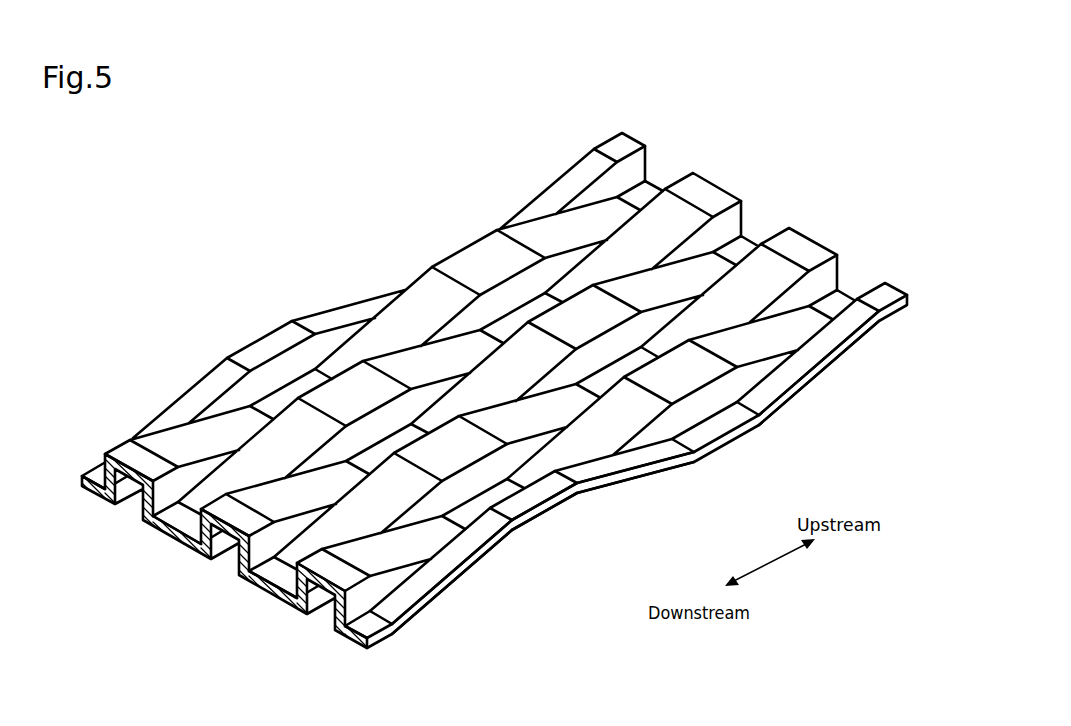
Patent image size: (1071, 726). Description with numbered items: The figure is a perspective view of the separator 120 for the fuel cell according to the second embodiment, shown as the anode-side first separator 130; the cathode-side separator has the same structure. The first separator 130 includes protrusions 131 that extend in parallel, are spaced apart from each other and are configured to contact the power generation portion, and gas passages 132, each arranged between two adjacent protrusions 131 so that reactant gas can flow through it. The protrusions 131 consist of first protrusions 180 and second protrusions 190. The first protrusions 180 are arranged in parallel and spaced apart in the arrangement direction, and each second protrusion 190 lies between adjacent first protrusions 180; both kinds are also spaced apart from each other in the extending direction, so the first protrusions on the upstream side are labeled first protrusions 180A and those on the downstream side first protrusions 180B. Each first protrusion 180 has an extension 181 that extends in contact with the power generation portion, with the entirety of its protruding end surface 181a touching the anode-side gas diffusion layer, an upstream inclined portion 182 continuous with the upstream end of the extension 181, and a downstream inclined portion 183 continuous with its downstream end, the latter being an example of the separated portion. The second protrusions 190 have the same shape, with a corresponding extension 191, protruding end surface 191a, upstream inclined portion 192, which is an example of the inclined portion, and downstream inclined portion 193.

The first separator 130 is at (515, 368).
The separator 120 is at (503, 406).
The protrusions 131 is at (503, 406).
The gas passages 132 is at (318, 342).
The first protrusions on the upstream side 180A is at (780, 314).
The first protrusions on the downstream side 180B is at (293, 557).
The first protrusions 180 is at (503, 406).
The second protrusions 190 is at (477, 407).
The extension 181 is at (390, 600).
The protruding end surface 181a is at (750, 413).
The upstream inclined portion 182 is at (413, 563).
The downstream inclined portion 183 is at (640, 487).
The extension 191 is at (490, 553).
The protruding end surface 191a is at (530, 530).
The upstream inclined portion 192 is at (583, 503).
The downstream inclined portion 193 is at (460, 577).